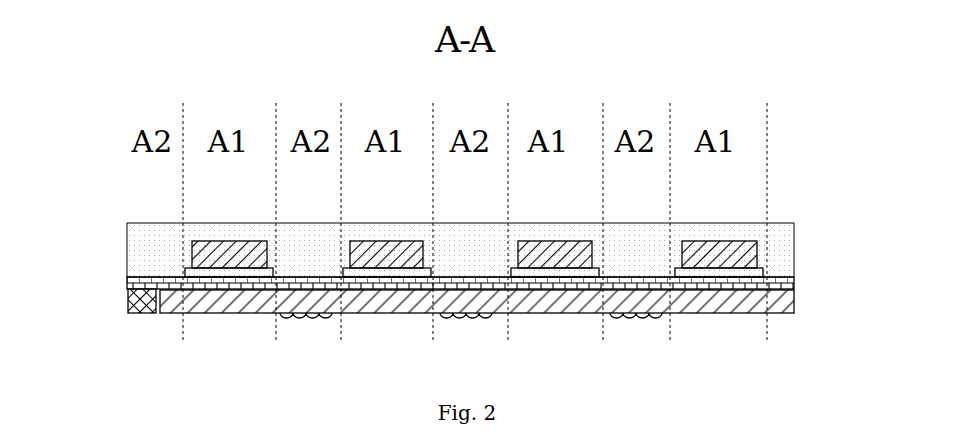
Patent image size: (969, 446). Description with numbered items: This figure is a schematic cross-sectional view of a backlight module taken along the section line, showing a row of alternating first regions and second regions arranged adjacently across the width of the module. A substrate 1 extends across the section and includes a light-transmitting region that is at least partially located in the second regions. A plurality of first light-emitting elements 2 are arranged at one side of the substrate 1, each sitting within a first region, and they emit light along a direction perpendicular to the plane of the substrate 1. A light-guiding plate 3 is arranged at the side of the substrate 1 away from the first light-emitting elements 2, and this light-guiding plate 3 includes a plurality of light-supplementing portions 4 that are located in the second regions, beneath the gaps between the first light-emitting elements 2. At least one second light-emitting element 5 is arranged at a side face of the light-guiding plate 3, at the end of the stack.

The substrate 1 is at (760, 281).
The first light-emitting elements 2 is at (738, 256).
The light-guiding plate 3 is at (785, 297).
The light-supplementing portions 4 is at (640, 315).
The second light-emitting element 5 is at (127, 294).